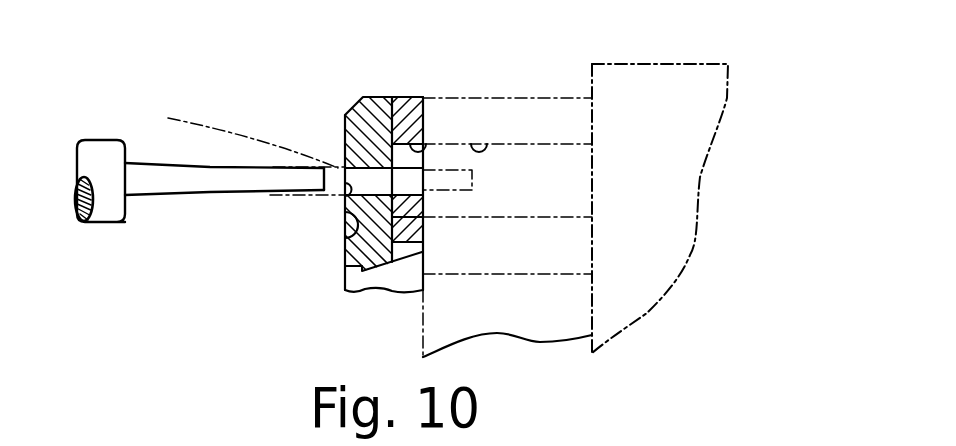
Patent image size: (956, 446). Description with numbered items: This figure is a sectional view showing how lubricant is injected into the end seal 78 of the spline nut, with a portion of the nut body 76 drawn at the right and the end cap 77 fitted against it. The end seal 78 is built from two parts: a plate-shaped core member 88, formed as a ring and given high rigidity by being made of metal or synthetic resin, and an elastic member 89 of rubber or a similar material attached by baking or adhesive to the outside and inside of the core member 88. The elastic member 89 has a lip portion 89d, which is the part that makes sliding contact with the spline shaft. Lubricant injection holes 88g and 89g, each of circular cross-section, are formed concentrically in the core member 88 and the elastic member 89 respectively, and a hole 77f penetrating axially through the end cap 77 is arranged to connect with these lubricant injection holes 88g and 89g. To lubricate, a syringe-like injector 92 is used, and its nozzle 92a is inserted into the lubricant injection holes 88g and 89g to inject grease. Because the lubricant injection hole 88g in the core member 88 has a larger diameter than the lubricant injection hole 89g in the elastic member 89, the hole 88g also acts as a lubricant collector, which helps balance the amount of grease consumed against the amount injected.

The housing / body 76 is at (672, 185).
The end cap 77 is at (566, 92).
The hole 77f is at (482, 150).
The end seal 78 is at (352, 100).
The core member 88 is at (402, 115).
The lubricant injection hole 88g is at (430, 146).
The elastic member 89 is at (345, 133).
The lubricant injection hole 89g is at (343, 190).
The lip portion 89d is at (352, 262).
The injector 92 is at (106, 232).
The nozzle 92a is at (262, 175).